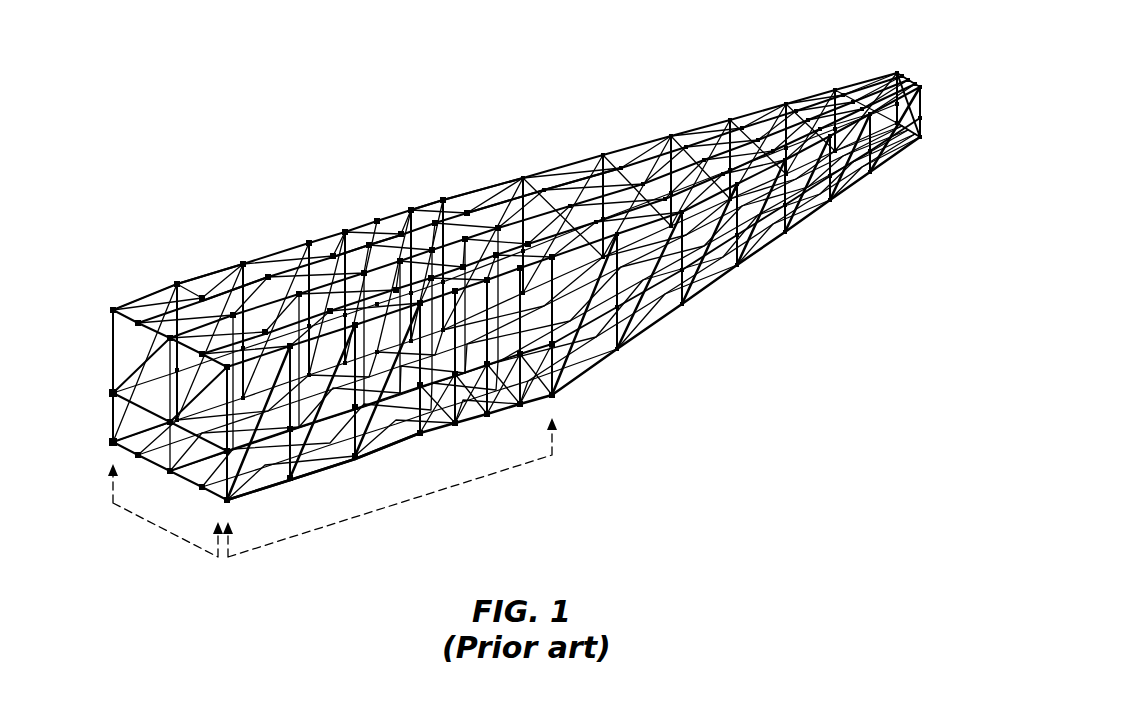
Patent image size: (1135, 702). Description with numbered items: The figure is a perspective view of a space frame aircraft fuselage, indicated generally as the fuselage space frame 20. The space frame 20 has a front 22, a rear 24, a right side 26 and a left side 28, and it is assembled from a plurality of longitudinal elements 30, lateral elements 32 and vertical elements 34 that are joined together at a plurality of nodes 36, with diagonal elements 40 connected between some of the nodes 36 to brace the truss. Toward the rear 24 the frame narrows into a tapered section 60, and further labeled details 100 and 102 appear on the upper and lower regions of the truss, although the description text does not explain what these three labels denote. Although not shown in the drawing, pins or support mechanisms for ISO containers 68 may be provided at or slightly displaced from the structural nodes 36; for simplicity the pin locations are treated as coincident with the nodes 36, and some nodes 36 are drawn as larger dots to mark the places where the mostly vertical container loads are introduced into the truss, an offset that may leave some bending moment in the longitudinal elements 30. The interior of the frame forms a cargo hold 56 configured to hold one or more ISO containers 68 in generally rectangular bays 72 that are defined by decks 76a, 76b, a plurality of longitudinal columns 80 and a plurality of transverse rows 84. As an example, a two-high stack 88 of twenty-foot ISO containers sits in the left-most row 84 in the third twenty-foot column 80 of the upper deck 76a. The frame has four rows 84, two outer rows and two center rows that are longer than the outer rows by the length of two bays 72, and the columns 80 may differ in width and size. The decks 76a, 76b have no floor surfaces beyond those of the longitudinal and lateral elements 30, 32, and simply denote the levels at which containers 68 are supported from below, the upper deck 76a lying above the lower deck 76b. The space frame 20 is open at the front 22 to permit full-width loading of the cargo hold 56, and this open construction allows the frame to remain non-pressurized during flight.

The fuselage space frame 20 is at (693, 462).
The front 22 is at (130, 590).
The rear 24 is at (938, 86).
The right side 26 is at (292, 184).
The left side 28 is at (522, 477).
The longitudinal element 30 is at (320, 476).
The lateral element 32 is at (401, 438).
The vertical element 34 is at (560, 366).
The node 36 is at (440, 196).
The diagonal element 40 is at (542, 186).
The cargo hold 56 is at (235, 282).
The tapered section 60 is at (858, 170).
The ISO container 68 is at (465, 422).
The bay 72 is at (152, 345).
The upper deck 76a is at (116, 398).
The lower deck 76b is at (116, 446).
The longitudinal column 80 is at (388, 522).
The transverse row 84 is at (168, 537).
The two-high stack of ISO containers 88 is at (365, 245).
The top longeron node 100 is at (290, 262).
The bottom corner longeron 102 is at (310, 476).